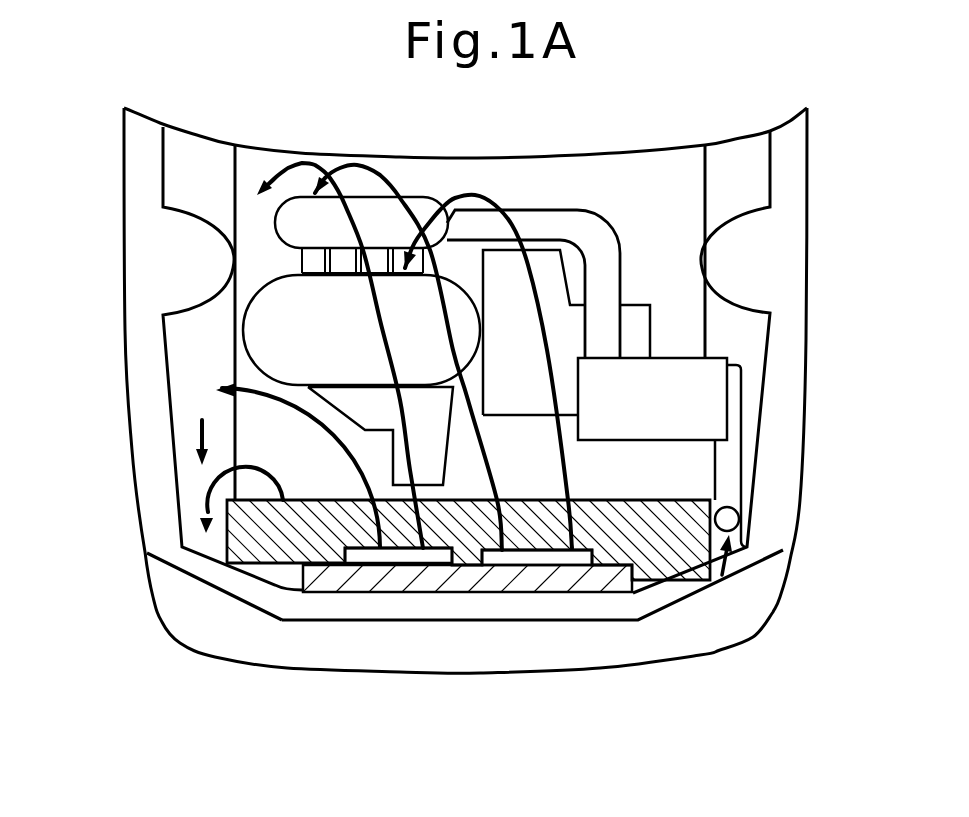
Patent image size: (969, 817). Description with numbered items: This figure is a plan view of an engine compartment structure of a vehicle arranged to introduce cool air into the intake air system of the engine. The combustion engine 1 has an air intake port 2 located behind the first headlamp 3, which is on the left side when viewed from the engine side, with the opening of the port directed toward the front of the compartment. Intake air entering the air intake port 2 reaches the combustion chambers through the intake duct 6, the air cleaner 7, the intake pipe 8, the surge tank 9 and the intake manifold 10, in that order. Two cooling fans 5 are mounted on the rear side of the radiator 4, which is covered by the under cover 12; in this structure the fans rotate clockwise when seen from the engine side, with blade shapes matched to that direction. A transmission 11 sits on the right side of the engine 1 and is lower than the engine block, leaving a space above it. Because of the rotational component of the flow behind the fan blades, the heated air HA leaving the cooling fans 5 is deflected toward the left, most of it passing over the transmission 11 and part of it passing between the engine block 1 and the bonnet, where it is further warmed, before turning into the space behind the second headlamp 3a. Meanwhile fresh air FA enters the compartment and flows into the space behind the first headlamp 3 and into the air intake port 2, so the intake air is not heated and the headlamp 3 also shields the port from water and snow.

The combustion engine 1 is at (253, 332).
The air intake port 2 is at (739, 519).
The first headlamp 3 is at (698, 595).
The second headlamp 3a is at (237, 600).
The radiator 4 is at (543, 582).
The cooling fans 5 is at (527, 560).
The intake duct 6 is at (742, 472).
The air cleaner 7 is at (690, 352).
The intake pipe 8 is at (560, 208).
The surge tank 9 is at (420, 197).
The intake manifold 10 is at (307, 263).
The transmission 11 is at (542, 265).
The under cover 12 is at (280, 552).
The heated air HA is at (202, 435).
The fresh air FA is at (720, 560).